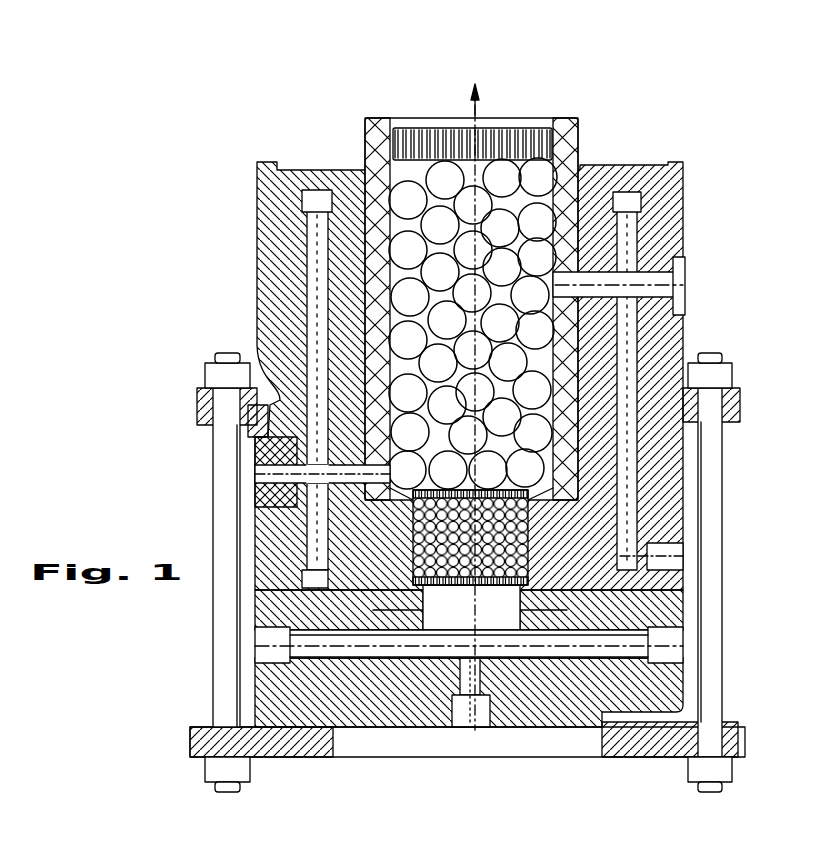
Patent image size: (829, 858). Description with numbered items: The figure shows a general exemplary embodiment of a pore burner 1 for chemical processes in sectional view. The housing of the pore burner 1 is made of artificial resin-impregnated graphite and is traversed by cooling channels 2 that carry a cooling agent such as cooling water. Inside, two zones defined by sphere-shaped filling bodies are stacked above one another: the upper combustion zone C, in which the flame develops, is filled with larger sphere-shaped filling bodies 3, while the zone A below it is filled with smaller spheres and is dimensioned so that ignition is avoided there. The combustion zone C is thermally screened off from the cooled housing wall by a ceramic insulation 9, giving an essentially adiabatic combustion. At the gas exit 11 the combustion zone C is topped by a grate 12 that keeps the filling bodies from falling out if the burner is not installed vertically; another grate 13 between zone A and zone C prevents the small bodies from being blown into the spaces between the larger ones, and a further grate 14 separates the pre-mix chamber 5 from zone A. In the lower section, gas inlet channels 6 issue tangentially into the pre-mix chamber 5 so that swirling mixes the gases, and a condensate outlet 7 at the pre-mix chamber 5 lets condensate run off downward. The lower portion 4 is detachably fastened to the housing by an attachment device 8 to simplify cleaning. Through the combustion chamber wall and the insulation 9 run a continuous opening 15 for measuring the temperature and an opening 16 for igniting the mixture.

The pore burner 1 is at (406, 441).
The cooling channels 2 is at (315, 258).
The larger sphere-shaped filling bodies 3 is at (562, 168).
The lower portion 4 is at (627, 697).
The pre-mix chamber 5 is at (493, 700).
The gas inlet channels 6 is at (320, 657).
The condensate outlet 7 is at (463, 715).
The attachment device 8 is at (718, 462).
The ceramic insulation 9 is at (372, 120).
The gas exit 11 is at (478, 103).
The grate 12 is at (545, 117).
The grate 13 is at (410, 520).
The grate 14 is at (500, 582).
The continuous opening 15 is at (670, 286).
The opening 16 is at (267, 468).
The Zone A is at (305, 570).
The Zone C is at (412, 204).